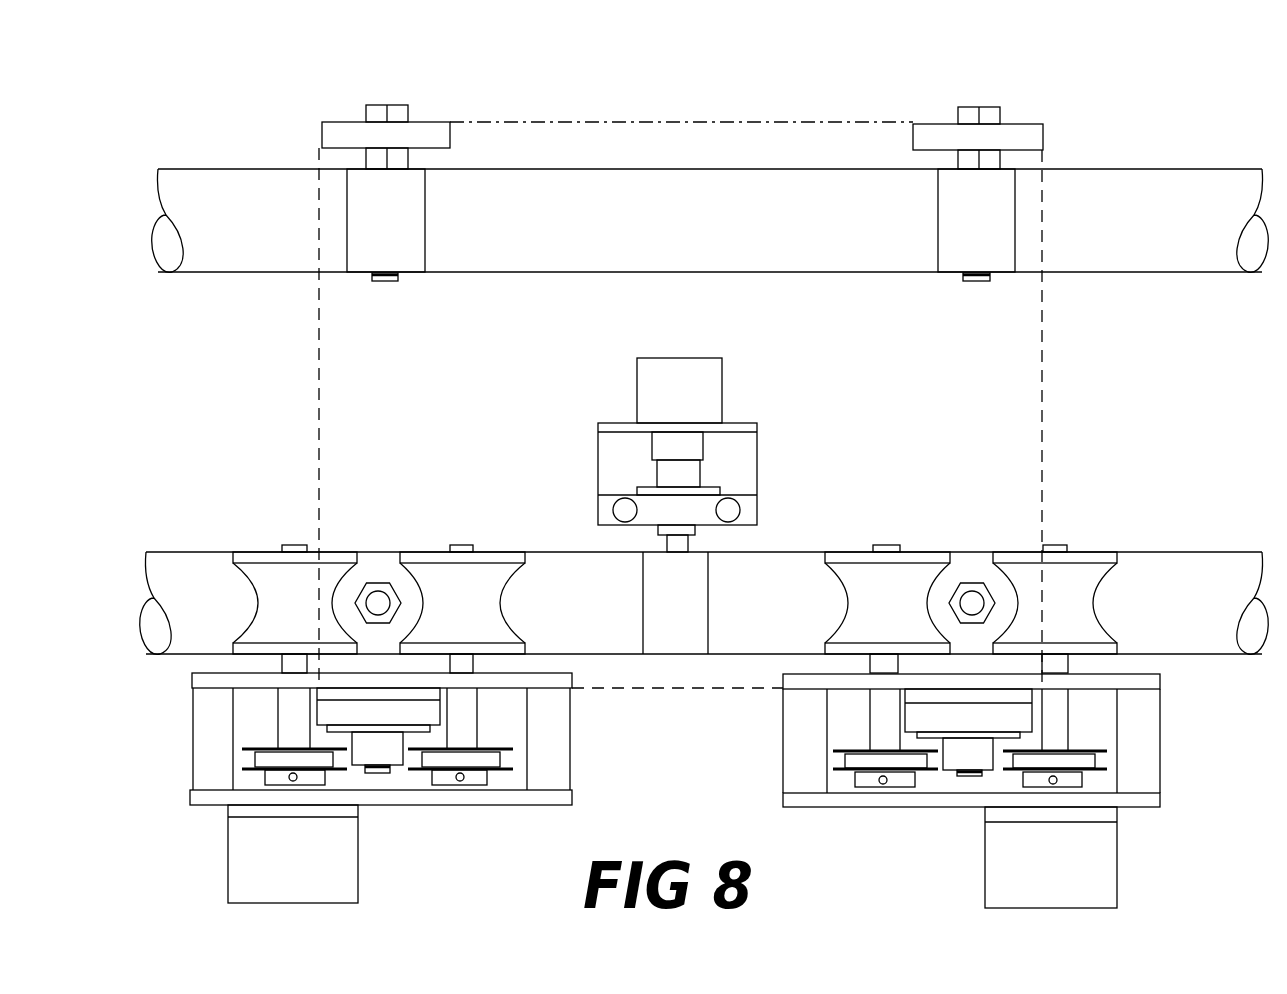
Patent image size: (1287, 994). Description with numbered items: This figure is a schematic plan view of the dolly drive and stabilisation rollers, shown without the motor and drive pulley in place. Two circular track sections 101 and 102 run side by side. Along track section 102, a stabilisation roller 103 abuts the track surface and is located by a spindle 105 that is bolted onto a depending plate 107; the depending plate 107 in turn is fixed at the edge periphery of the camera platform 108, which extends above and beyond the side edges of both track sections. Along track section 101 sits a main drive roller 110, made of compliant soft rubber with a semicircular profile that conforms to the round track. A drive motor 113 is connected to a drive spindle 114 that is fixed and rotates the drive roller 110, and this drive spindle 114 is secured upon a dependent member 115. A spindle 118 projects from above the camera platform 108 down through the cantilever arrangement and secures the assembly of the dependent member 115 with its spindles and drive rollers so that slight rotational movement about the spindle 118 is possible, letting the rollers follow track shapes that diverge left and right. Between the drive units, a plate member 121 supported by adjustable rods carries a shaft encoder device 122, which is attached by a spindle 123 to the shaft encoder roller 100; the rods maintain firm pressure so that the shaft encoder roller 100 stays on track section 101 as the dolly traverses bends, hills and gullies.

The shaft encoder roller 100 is at (687, 628).
The circular track section 101 is at (218, 617).
The circular track section 102 is at (243, 222).
The stabilisation roller 103 is at (1005, 212).
The spindle 105 is at (990, 112).
The depending plate 107 is at (940, 128).
The camera platform 108 is at (1041, 368).
The main drive roller 110 is at (1087, 577).
The drive motor 113 is at (1100, 858).
The drive spindle 114 is at (1055, 547).
The dependent member 115 is at (1127, 683).
The spindle 118 is at (972, 602).
The plate member 121 is at (750, 503).
The shaft encoder device 122 is at (705, 392).
The spindle 123 is at (677, 545).